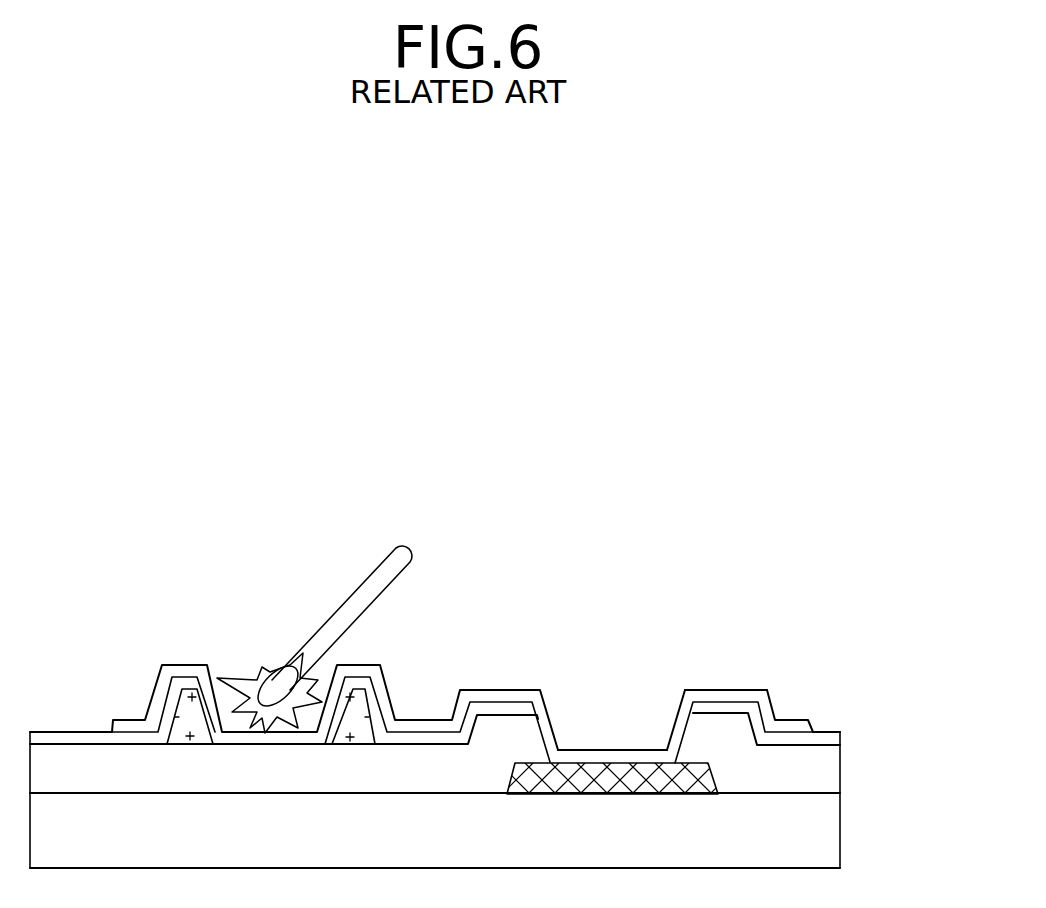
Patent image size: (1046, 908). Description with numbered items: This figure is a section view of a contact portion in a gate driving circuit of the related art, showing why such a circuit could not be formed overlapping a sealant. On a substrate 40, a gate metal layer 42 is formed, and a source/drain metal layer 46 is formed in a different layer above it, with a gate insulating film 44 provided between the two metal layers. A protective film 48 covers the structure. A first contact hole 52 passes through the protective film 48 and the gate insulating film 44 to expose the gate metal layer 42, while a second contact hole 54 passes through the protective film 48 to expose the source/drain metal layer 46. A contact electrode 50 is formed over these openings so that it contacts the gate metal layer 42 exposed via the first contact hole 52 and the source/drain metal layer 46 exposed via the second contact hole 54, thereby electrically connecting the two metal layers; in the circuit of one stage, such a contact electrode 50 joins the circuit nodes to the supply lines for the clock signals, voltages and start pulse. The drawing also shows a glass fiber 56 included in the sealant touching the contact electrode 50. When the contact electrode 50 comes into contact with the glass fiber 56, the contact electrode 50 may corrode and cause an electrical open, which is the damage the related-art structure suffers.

The substrate 40 is at (830, 836).
The gate metal layer 42 is at (693, 783).
The gate insulating film 44 is at (830, 770).
The source/drain metal layer 46 is at (197, 700).
The protective film 48 is at (830, 737).
The contact electrode 50 is at (727, 692).
The first contact hole 52 is at (618, 735).
The second contact hole 54 is at (235, 675).
The glass fiber 56 is at (352, 605).